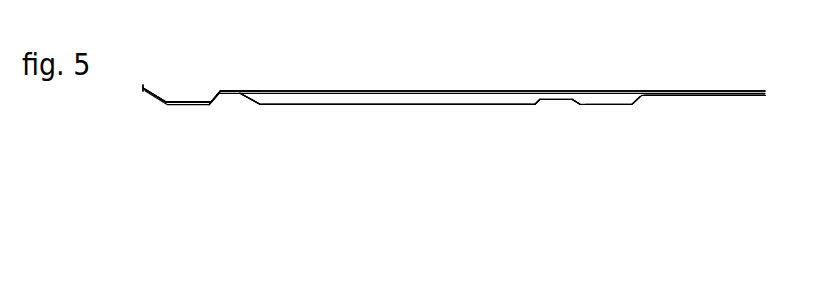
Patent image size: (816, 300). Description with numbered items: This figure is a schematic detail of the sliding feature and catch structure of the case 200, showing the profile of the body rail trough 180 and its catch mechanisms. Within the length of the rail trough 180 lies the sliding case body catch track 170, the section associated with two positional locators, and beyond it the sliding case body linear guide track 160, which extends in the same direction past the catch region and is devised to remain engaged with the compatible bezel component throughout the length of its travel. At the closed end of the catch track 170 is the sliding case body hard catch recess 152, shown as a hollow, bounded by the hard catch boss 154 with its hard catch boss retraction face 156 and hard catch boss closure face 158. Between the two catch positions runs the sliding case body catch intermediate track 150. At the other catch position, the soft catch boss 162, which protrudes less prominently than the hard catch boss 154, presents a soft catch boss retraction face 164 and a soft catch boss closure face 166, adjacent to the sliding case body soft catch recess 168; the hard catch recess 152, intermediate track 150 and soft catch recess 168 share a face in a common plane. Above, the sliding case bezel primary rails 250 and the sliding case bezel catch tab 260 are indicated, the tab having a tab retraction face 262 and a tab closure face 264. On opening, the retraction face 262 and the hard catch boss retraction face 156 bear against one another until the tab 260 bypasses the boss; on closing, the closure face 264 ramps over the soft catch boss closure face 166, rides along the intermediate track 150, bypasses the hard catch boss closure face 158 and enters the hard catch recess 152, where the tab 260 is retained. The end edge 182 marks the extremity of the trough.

The sliding case body catch intermediate track 150 is at (396, 163).
The sliding case body hard catch recess 152 is at (178, 163).
The sliding case body hard catch boss 154 is at (238, 163).
The hard catch boss retraction face 156 is at (218, 97).
The hard catch boss closure face 158 is at (250, 100).
The sliding case body linear guide track 160 is at (716, 163).
The sliding case body soft catch boss 162 is at (558, 163).
The soft catch boss retraction face 164 is at (540, 102).
The soft catch boss closure face 166 is at (573, 102).
The sliding case body soft catch recess 168 is at (613, 163).
The sliding case body catch track 170 is at (392, 216).
The body rail trough 180 is at (464, 264).
The end edge 182 is at (143, 86).
The strip 200 is at (704, 197).
The sliding case bezel primary rails 250 is at (503, 43).
The sliding case bezel catch tab 260 is at (180, 43).
The sliding case bezel tab retraction face 262 is at (218, 94).
The sliding case bezel tab closure face 264 is at (153, 93).